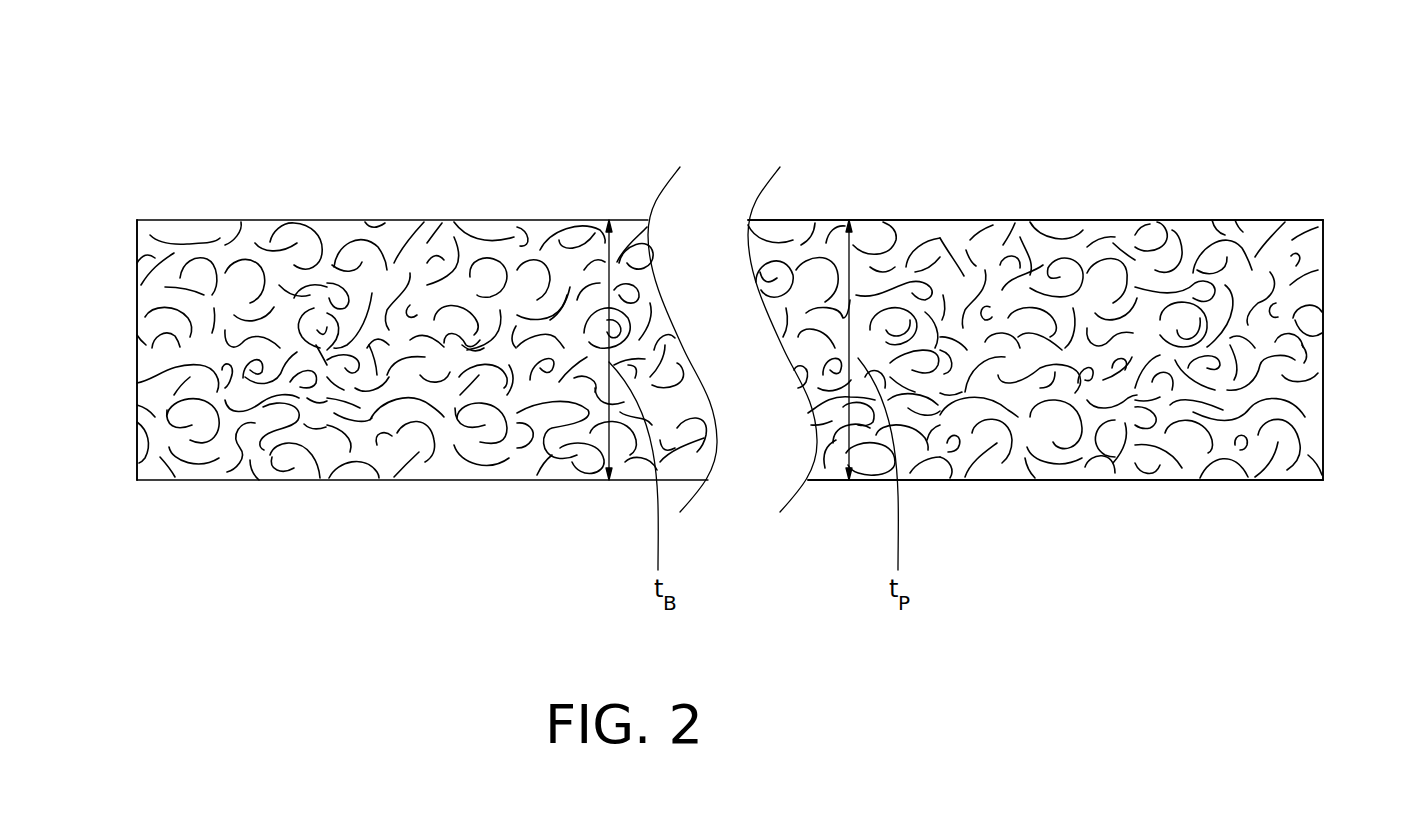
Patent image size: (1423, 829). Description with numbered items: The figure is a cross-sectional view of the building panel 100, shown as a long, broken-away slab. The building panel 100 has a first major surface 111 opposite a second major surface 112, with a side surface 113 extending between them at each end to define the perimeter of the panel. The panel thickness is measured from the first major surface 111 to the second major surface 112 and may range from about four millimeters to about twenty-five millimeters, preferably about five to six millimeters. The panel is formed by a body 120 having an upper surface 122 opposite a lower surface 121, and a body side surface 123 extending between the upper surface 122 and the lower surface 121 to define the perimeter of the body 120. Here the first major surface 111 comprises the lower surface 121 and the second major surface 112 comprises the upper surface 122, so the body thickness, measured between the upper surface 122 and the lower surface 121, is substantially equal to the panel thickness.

The building panel 100 is at (1266, 161).
The first major surface 111 is at (1153, 481).
The second major surface 112 is at (1038, 220).
The side surface 113 is at (137, 301).
The body 120 is at (812, 270).
The lower surface 121 is at (1153, 481).
The upper surface 122 is at (1038, 220).
The body side surface 123 is at (137, 392).